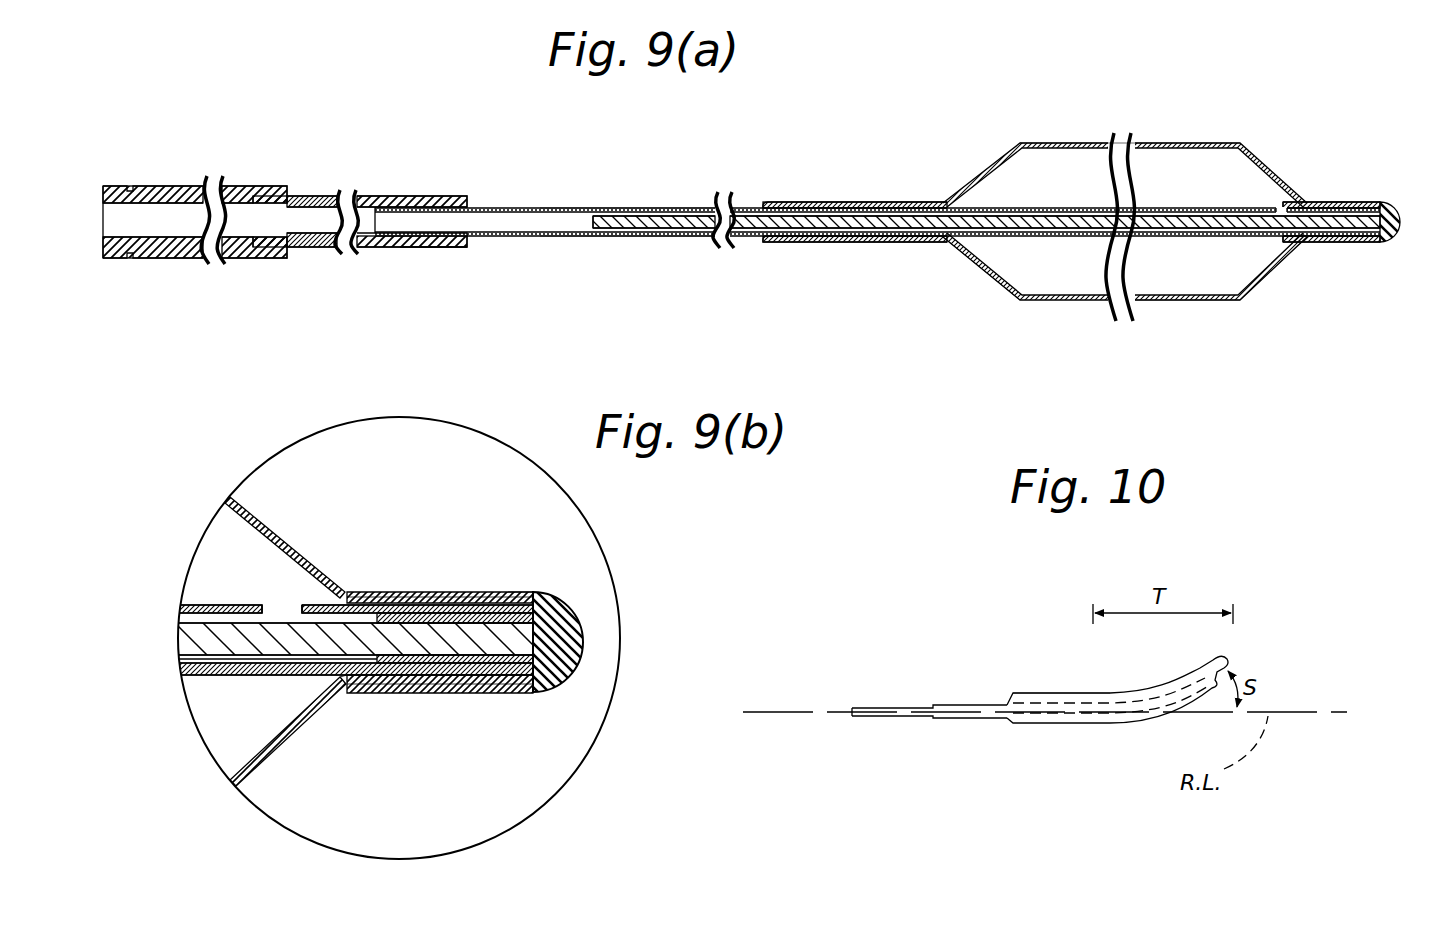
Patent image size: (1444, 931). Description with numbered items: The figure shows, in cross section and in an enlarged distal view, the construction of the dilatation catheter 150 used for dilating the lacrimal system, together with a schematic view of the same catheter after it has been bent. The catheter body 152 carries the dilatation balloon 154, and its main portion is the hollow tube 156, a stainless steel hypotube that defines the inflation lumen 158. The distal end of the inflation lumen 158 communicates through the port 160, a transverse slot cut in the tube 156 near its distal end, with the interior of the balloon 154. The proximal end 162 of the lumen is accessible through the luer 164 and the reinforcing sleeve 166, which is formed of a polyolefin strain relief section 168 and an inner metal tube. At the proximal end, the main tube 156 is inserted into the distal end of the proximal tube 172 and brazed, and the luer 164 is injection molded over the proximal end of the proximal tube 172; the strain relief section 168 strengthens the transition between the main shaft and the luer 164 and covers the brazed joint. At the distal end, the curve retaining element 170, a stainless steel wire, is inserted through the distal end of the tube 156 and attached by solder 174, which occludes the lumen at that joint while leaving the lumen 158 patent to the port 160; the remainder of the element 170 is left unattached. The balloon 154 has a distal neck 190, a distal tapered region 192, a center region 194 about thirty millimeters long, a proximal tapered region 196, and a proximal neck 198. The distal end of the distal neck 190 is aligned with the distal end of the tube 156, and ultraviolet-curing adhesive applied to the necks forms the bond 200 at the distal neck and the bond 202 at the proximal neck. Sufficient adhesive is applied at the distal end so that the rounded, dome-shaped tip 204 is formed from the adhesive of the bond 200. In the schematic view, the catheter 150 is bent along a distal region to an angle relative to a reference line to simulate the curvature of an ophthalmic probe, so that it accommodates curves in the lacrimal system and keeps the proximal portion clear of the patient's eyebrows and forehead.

In FIG. 9A, the dilatation catheter 150 is at (1112, 96).
In FIG. 10, the dilatation catheter 150 is at (1031, 666).
In FIG. 9A, the catheter body 152 is at (666, 195).
In FIG. 9A, the dilatation balloon 154 is at (1232, 143).
In FIG. 9B, the dilatation balloon 154 is at (303, 539).
In FIG. 10, the dilatation balloon 154 is at (1068, 724).
In FIG. 9A, the hollow tube 156 is at (573, 238).
In FIG. 9B, the hollow tube 156 is at (192, 677).
In FIG. 10, the hollow tube 156 is at (875, 717).
In FIG. 9A, the inflation lumen 158 is at (497, 232).
In FIG. 9B, the inflation lumen 158 is at (170, 611).
In FIG. 9A, the port 160 is at (1279, 206).
In FIG. 9B, the port 160 is at (283, 610).
In FIG. 9A, the proximal end 162 is at (86, 212).
In FIG. 9A, the luer 164 is at (175, 186).
In FIG. 9A, the reinforcing sleeve 166 is at (410, 251).
In FIG. 9A, the strain relief section 168 is at (425, 196).
In FIG. 9A, the curve retaining element 170 is at (682, 229).
In FIG. 9B, the curve retaining element 170 is at (187, 637).
In FIG. 9A, the proximal tube 172 is at (297, 233).
In FIG. 9B, the solder 174 is at (440, 697).
In FIG. 9A, the distal neck 190 is at (1336, 244).
In FIG. 9B, the distal neck 190 is at (430, 594).
In FIG. 9A, the distal tapered region 192 is at (1268, 280).
In FIG. 9B, the distal tapered region 192 is at (282, 754).
In FIG. 9A, the center region 194 is at (1186, 302).
In FIG. 9A, the proximal tapered region 196 is at (986, 278).
In FIG. 9A, the proximal neck 198 is at (840, 244).
In FIG. 9A, the bond 200 is at (1337, 203).
In FIG. 9B, the bond 200 is at (328, 681).
In FIG. 9A, the bond 202 is at (808, 206).
In FIG. 9A, the domed tip 204 is at (1397, 199).
In FIG. 9B, the domed tip 204 is at (589, 693).